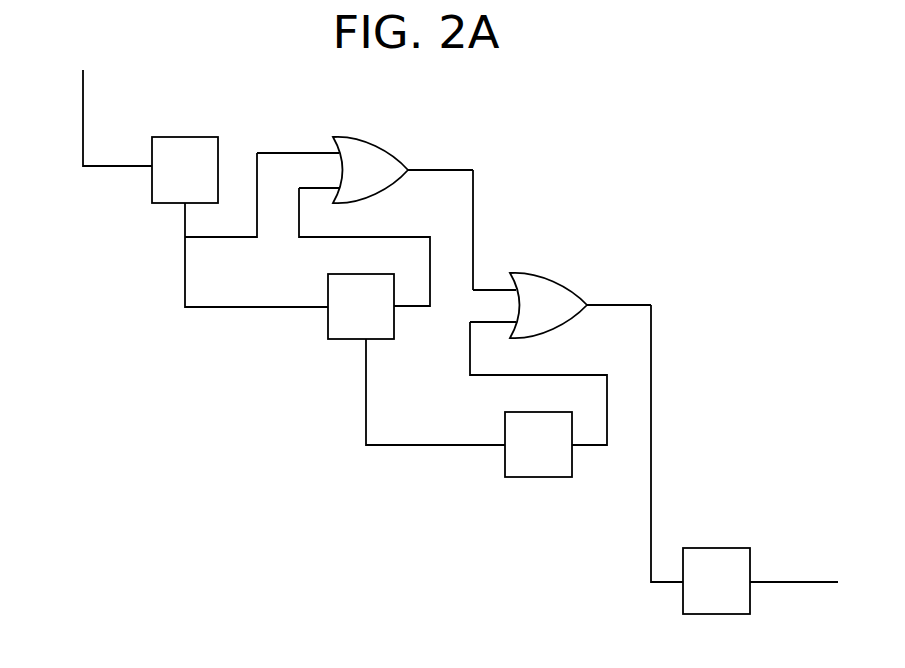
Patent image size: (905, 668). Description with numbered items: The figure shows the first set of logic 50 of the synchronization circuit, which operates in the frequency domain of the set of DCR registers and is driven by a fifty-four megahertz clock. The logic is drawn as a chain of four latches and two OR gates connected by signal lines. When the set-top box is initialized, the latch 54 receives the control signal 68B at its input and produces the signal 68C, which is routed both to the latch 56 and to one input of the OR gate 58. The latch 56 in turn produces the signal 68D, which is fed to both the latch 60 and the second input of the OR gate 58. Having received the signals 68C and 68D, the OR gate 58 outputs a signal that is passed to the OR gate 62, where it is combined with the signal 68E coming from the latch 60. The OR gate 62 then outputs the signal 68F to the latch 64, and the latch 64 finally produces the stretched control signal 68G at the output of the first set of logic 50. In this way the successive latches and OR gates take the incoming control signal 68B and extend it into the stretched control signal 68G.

The first set of logic 50 is at (246, 407).
The latch 54 is at (190, 137).
The latch 56 is at (365, 274).
The OR gate 58 is at (388, 151).
The latch 60 is at (540, 412).
The OR gate 62 is at (566, 287).
The latch 64 is at (728, 548).
The control signal 68B is at (83, 90).
The signal 68C is at (185, 223).
The signal 68D is at (366, 361).
The signal 68E is at (595, 445).
The signal 68F is at (617, 305).
The stretched control signal 68G is at (807, 582).